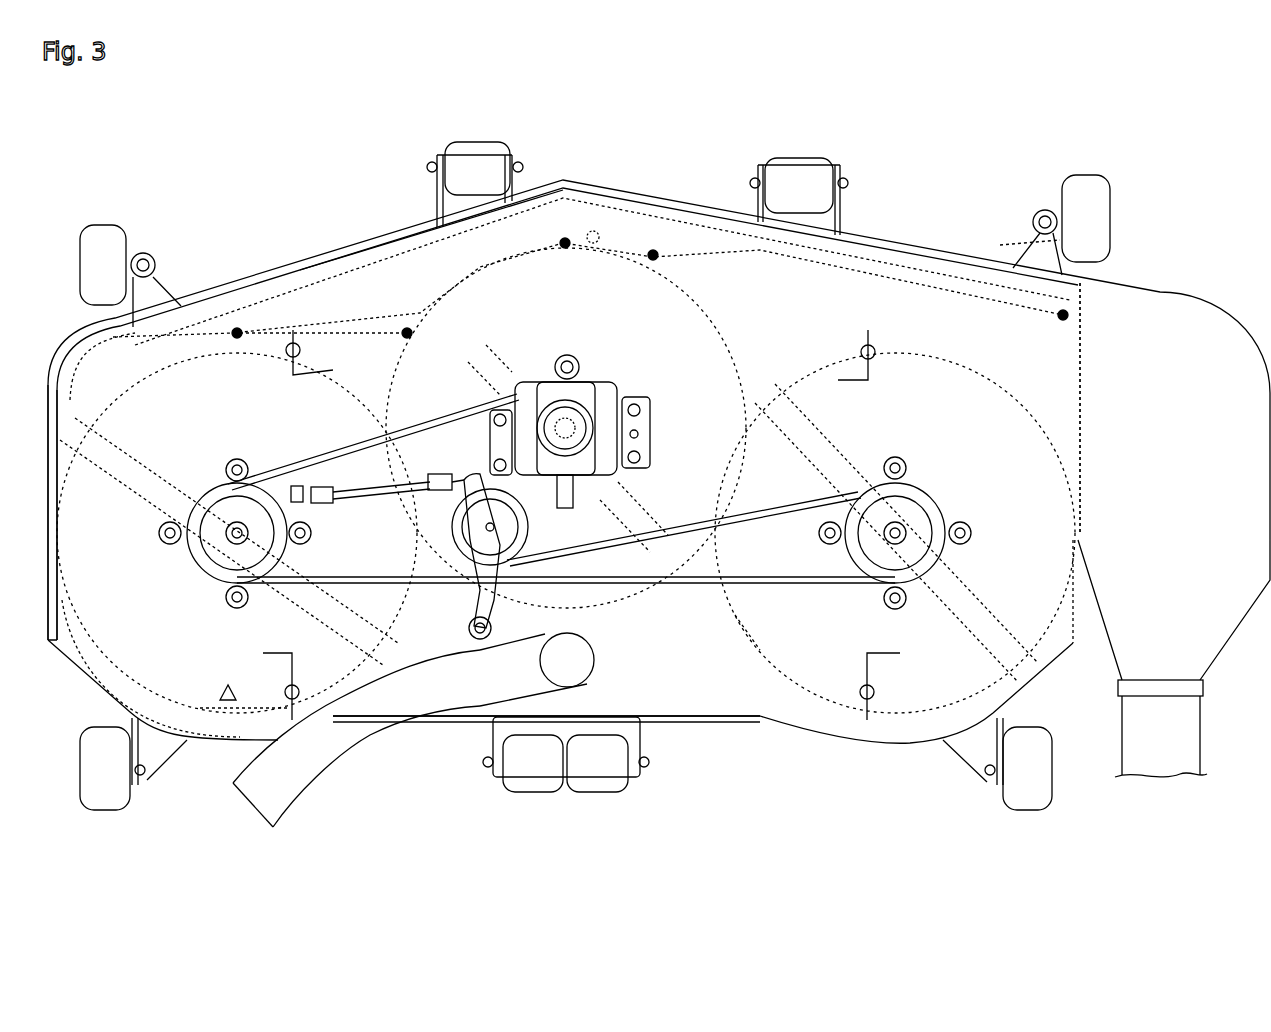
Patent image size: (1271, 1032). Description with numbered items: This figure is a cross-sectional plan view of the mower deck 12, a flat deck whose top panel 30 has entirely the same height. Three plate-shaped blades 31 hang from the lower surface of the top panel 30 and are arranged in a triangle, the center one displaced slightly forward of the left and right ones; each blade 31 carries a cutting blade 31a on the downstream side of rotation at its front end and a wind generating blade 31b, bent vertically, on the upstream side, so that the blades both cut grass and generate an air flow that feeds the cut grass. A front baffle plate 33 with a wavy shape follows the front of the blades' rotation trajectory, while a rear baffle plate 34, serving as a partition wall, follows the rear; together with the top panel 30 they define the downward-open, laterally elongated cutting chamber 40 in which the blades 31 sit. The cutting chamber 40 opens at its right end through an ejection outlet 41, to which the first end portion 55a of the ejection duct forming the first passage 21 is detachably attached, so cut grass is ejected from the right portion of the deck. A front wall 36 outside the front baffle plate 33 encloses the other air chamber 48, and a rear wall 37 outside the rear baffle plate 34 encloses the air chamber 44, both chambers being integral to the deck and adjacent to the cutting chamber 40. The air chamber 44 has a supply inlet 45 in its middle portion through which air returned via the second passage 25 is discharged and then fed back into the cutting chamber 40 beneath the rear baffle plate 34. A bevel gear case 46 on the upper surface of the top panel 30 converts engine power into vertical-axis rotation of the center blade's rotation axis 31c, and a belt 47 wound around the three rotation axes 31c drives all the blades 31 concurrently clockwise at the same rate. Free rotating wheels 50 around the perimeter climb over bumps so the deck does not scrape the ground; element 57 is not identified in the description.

The mower deck 12 is at (880, 225).
The first passage 21 is at (1205, 745).
The second passage 25 is at (355, 745).
The top panel 30 is at (265, 365).
The blade 31 is at (555, 350).
The cutting blade 31a is at (505, 335).
The wind generating blade 31b is at (370, 430).
The rotation axis 31c is at (600, 385).
The front baffle plate 33 is at (355, 328).
The rear baffle plate 34 is at (735, 620).
The front wall 36 is at (395, 235).
The rear wall 37 is at (760, 725).
The cutting chamber 40 is at (226, 702).
The ejection outlet 41 is at (1085, 420).
The air chamber 44 is at (676, 700).
The supply inlet 45 is at (595, 675).
The bevel gear case 46 is at (652, 435).
The belt 47 is at (385, 425).
The other air chamber 48 is at (325, 270).
The free rotating wheel 50 is at (105, 240).
The first end portion 55a is at (1100, 330).
The pipe end 57 is at (292, 790).